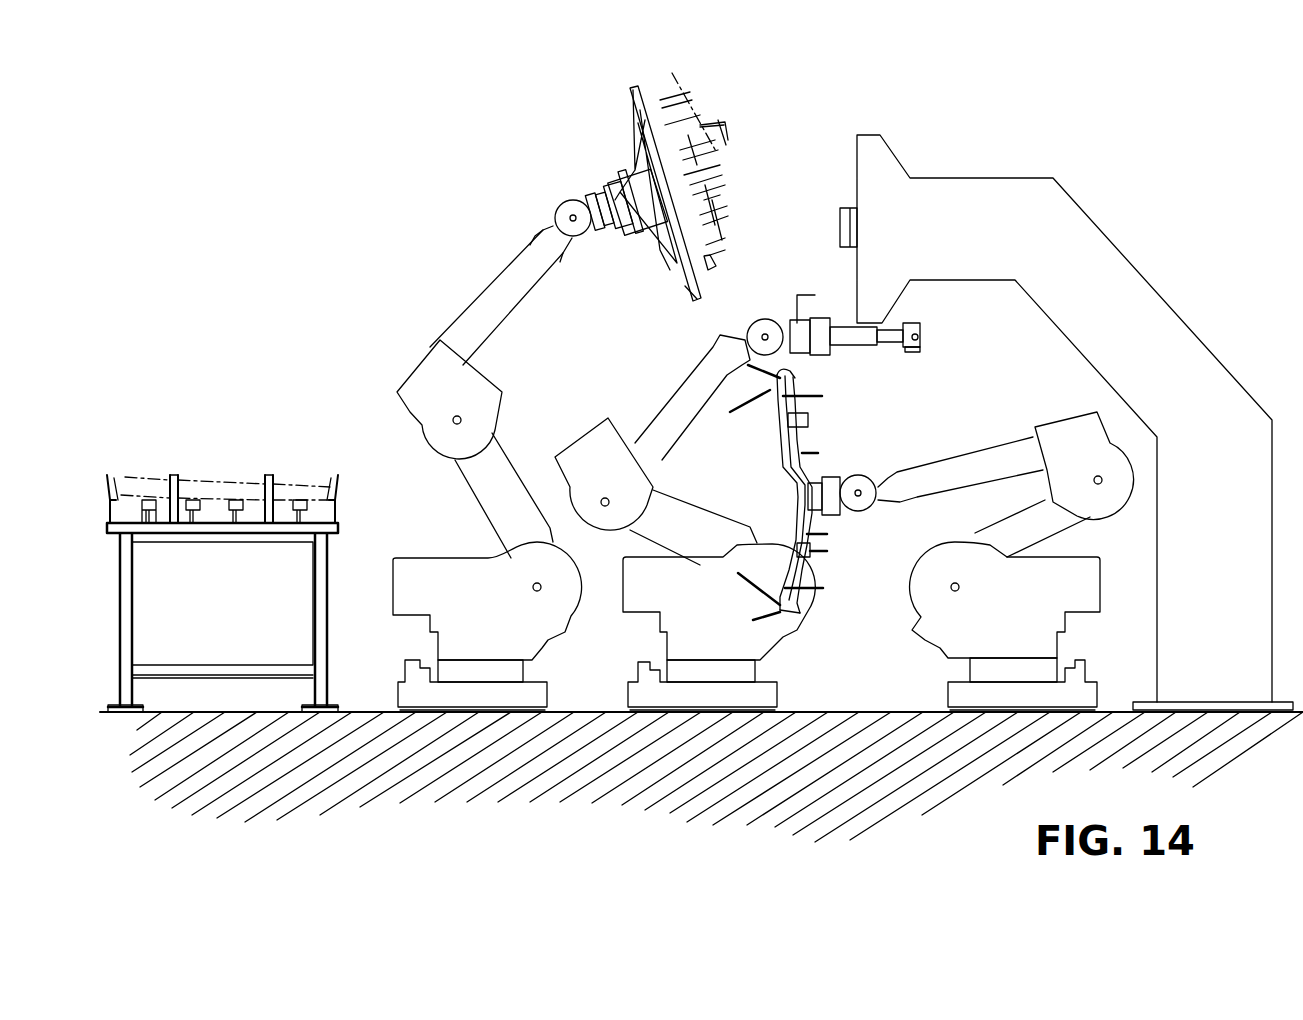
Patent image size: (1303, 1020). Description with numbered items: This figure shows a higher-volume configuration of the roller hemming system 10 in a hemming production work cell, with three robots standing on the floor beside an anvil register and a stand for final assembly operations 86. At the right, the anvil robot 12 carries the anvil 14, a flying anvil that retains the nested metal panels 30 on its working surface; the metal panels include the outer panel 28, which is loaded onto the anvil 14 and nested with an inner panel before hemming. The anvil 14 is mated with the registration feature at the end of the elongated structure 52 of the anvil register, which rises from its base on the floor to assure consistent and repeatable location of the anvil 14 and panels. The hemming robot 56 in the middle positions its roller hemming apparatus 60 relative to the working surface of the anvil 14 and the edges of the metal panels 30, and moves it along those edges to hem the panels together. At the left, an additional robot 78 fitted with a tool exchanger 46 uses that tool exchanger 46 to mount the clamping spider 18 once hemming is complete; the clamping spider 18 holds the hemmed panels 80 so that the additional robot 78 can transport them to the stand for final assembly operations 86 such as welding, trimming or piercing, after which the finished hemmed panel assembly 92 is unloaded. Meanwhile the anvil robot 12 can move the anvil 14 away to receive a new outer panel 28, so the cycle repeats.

The roller hemming system 10 is at (1066, 402).
The anvil robot 12 is at (930, 633).
The anvil 14 is at (773, 460).
The clamping spider 18 is at (653, 78).
The outer panel 28 is at (767, 427).
The metal panels 30 is at (700, 93).
The tool exchanger 46 is at (600, 183).
The elongated structure 52 is at (958, 176).
The hemming robot 56 is at (768, 525).
The roller hemming apparatus 60 is at (817, 312).
The additional robot 78 is at (518, 411).
The hemmed panels 80 is at (707, 113).
The final assembly operations 86 is at (258, 513).
The hemmed panel assembly 92 is at (226, 478).